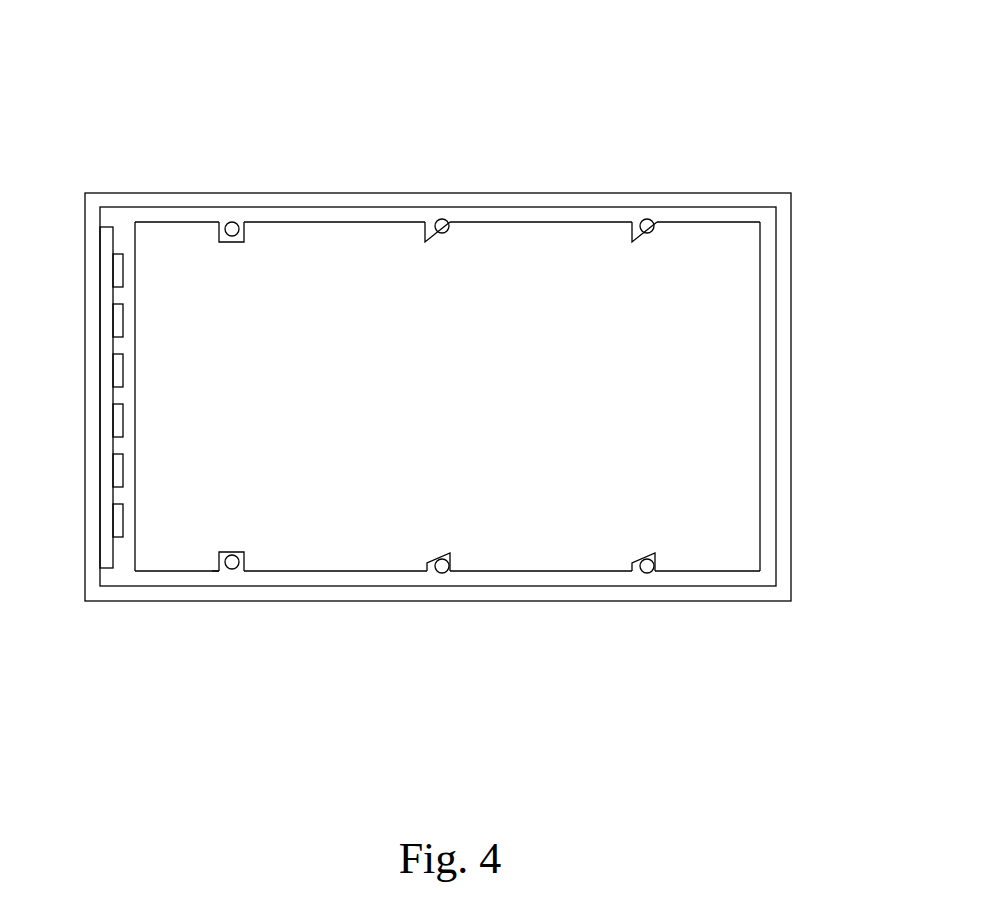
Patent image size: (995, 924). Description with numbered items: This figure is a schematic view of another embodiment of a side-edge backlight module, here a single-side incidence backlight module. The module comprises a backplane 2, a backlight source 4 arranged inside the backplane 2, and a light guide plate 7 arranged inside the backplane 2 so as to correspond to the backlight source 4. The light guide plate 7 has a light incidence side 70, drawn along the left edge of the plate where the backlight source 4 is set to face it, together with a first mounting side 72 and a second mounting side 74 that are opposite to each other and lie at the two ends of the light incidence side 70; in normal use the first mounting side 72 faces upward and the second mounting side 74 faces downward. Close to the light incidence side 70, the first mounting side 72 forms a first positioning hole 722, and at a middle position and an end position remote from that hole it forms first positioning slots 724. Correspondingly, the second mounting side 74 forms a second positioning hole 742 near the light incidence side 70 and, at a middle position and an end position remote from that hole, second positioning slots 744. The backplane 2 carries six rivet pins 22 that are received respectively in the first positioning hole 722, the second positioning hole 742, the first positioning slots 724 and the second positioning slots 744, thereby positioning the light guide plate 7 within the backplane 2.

The backlight source 4 is at (110, 266).
The backplane 2 is at (146, 207).
The rivet pin 22 is at (222, 570).
The light incidence side 70 is at (135, 523).
The light guide plate 7 is at (489, 398).
The first mounting side 72 is at (459, 126).
The first positioning hole 722 is at (222, 222).
The first positioning slot 724 is at (432, 225).
The second mounting side 74 is at (459, 669).
The second positioning hole 742 is at (242, 567).
The second positioning slot 744 is at (430, 572).